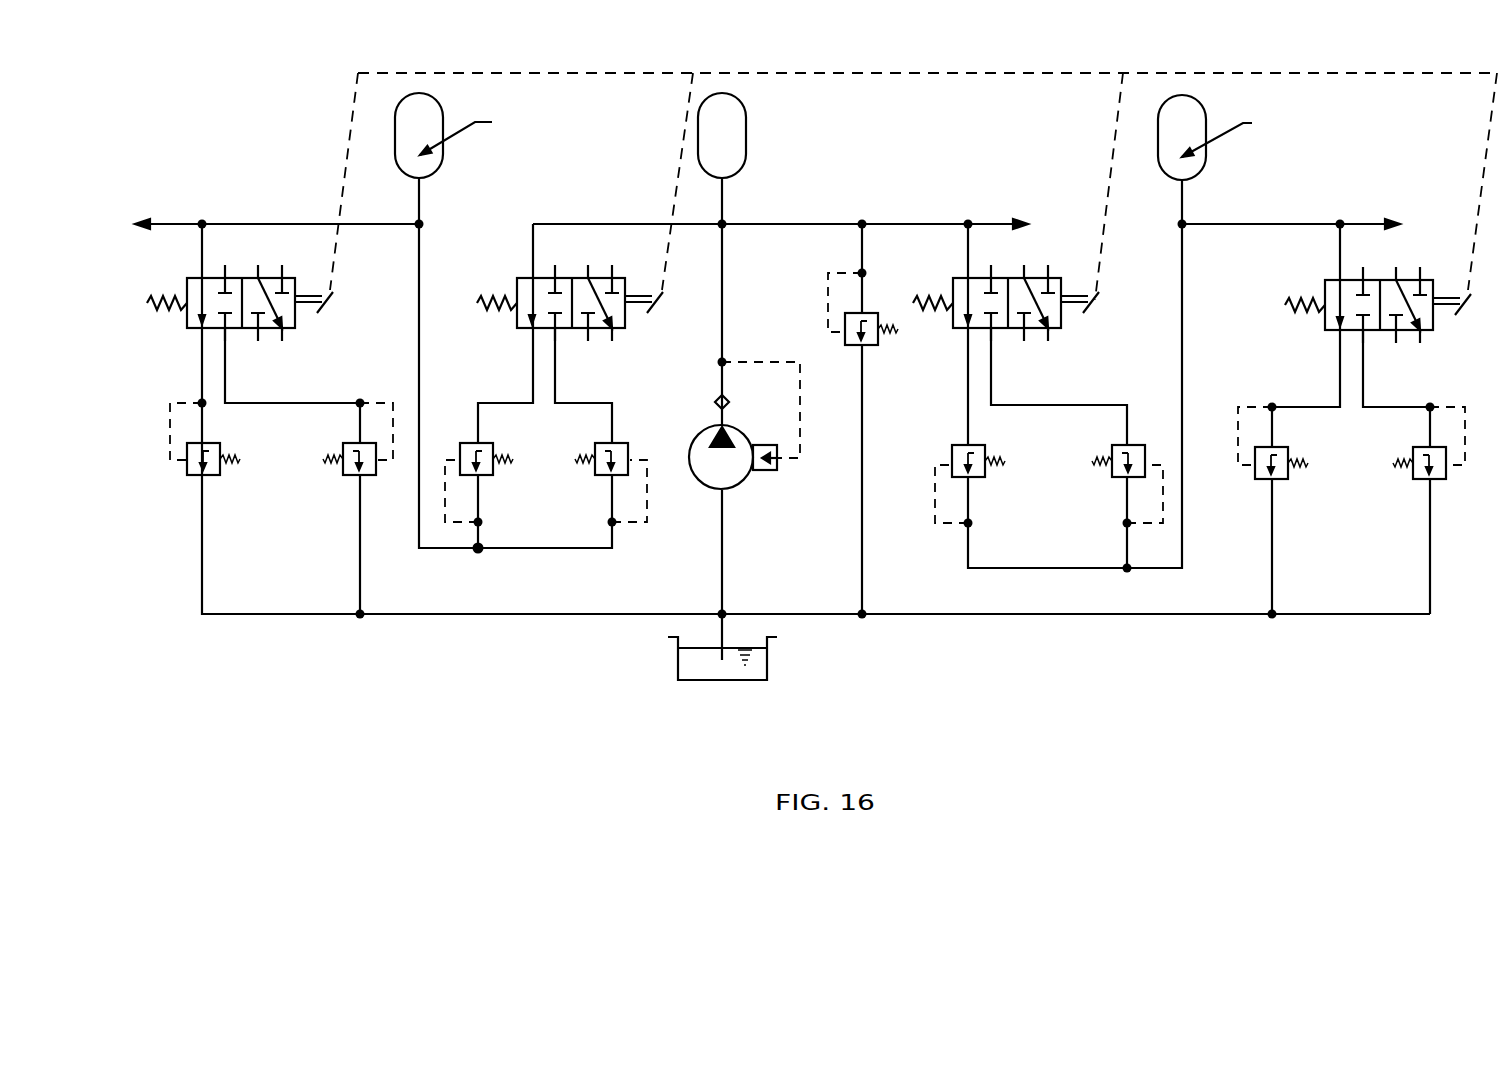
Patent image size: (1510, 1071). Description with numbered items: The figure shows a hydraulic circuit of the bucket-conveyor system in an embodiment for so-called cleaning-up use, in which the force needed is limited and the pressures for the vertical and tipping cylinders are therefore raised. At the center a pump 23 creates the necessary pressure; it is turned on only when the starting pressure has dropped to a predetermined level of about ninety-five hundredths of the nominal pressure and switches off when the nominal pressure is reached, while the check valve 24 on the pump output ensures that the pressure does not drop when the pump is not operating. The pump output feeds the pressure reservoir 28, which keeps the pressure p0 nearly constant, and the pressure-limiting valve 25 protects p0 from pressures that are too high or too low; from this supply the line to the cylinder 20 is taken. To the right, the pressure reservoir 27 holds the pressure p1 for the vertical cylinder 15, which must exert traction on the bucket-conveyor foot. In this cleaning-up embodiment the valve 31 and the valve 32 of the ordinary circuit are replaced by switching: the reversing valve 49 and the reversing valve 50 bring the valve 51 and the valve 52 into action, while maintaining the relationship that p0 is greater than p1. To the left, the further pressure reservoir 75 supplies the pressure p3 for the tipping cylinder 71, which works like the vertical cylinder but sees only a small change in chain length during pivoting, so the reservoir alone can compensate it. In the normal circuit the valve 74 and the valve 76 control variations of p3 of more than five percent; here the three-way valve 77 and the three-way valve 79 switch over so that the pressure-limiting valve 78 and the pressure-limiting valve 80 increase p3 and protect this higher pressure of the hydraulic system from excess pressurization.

The tipping cylinder 71 is at (168, 212).
The pressure reservoir 75 is at (485, 157).
The three-way valve 79 is at (240, 294).
The valve 76 is at (185, 454).
The pressure-limiting valve 80 is at (333, 454).
The three-way valve 77 is at (570, 294).
The valve 74 is at (504, 470).
The pressure-limiting valve 78 is at (583, 470).
The pressure reservoir 28 is at (740, 157).
The check valve 24 is at (707, 393).
The pump 23 is at (769, 442).
The pressure-limiting valve 25 is at (879, 326).
The cylinder 20 is at (1004, 211).
The reversing valve 49 is at (1006, 294).
The valve 31 is at (947, 470).
The valve 51 is at (1099, 479).
The pressure reservoir 27 is at (1240, 157).
The vertical cylinder 15 is at (1375, 216).
The reversing valve 50 is at (1378, 295).
The valve 32 is at (1260, 459).
The valve 52 is at (1445, 459).